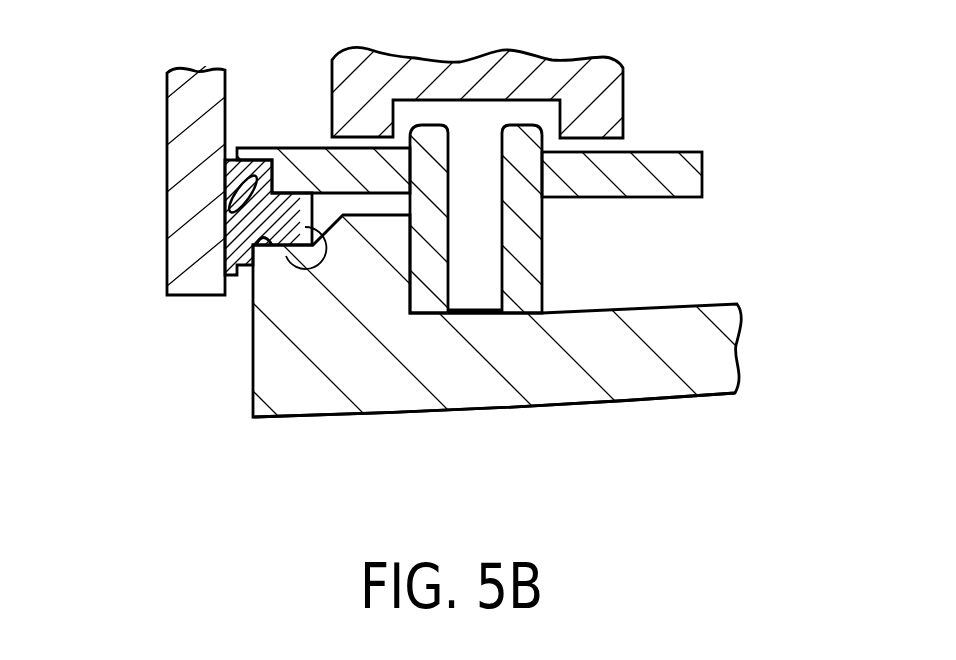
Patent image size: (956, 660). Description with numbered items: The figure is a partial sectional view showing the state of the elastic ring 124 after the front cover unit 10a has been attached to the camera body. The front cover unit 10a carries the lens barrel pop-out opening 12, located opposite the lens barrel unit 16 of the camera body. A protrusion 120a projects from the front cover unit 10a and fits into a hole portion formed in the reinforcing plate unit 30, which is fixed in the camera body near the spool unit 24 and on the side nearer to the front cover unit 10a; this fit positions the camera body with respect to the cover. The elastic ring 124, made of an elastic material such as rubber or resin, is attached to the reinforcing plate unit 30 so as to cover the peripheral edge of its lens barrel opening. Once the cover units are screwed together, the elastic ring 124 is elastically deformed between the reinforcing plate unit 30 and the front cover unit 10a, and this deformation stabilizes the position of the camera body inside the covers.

The lens barrel unit 16 is at (167, 170).
The spool unit 24 is at (627, 91).
The reinforcing plate unit 30 is at (703, 170).
The protrusion 120a is at (543, 258).
The elastic ring 124 is at (323, 243).
The lens barrel pop-out opening 12 is at (253, 374).
The front cover unit 10a is at (680, 398).